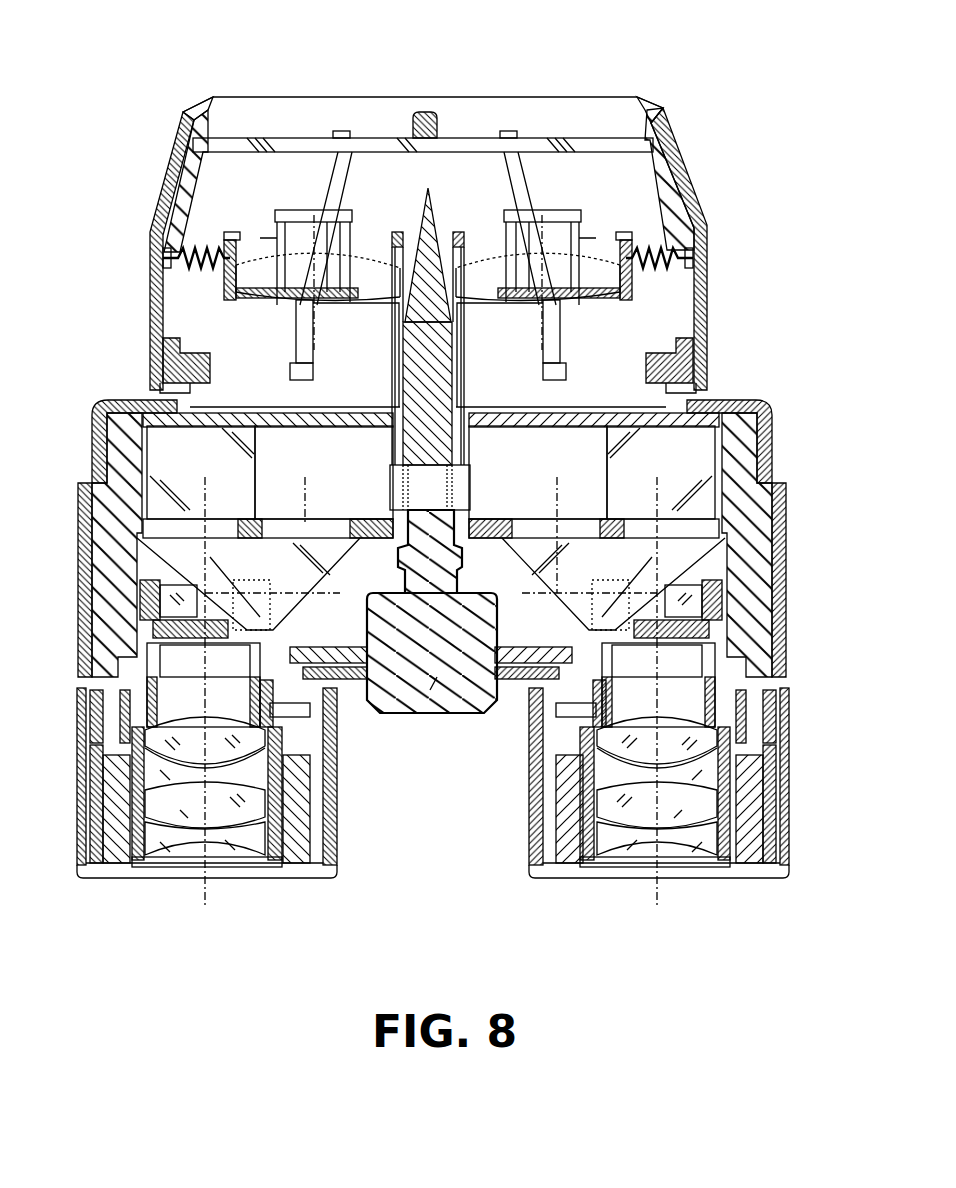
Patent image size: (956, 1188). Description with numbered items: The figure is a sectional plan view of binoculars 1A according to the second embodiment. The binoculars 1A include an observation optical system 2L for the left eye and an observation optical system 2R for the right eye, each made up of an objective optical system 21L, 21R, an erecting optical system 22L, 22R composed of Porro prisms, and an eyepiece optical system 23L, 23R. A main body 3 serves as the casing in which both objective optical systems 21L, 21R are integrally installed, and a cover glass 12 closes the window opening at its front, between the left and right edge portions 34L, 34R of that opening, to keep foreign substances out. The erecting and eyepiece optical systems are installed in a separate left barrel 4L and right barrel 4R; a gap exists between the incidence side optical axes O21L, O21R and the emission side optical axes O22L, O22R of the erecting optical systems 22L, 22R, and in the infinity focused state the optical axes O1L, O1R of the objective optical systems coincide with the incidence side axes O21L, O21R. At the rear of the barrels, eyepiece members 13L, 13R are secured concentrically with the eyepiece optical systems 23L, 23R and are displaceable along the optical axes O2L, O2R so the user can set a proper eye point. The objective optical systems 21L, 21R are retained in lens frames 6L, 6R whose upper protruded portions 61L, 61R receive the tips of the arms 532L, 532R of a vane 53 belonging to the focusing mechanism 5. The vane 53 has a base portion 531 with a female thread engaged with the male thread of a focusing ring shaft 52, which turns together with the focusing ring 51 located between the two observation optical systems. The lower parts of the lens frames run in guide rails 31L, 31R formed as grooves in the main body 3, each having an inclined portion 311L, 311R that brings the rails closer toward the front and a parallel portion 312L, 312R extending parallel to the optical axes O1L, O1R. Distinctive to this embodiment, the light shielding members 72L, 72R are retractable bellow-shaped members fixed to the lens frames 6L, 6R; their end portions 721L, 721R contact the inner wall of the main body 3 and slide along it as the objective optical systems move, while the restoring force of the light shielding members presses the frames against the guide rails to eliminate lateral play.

The binoculars 1A is at (531, 84).
The main body 3 is at (695, 142).
The cover glass 12 is at (318, 142).
The left edge portion 34L is at (186, 120).
The right edge portion 34R is at (660, 118).
The left light shielding member 72L is at (180, 243).
The right light shielding member 72R is at (705, 240).
The left end portion 721L is at (162, 268).
The right end portion 721R is at (705, 263).
The left lens frame 6L is at (223, 277).
The right lens frame 6R is at (635, 277).
The left objective optical system 21L is at (255, 267).
The right objective optical system 21R is at (603, 257).
The left protruded portion 61L is at (273, 223).
The right protruded portion 61R is at (585, 225).
The left arm 532L is at (373, 257).
The right arm 532R is at (480, 253).
The left guide rail 31L is at (153, 363).
The right guide rail 31R is at (711, 360).
The left inclined portion 311L is at (295, 315).
The right inclined portion 311R is at (631, 333).
The left parallel portion 312L is at (296, 365).
The right parallel portion 312R is at (565, 365).
The optical axis of left objective optical system O1L is at (315, 337).
The optical axis of right objective optical system O1R is at (541, 327).
The focusing ring shaft 52 is at (403, 442).
The vane 53 is at (470, 478).
The base portion 531 is at (400, 487).
The focusing mechanism 5 is at (460, 714).
The focusing ring 51 is at (437, 677).
The left barrel 4L is at (78, 600).
The right barrel 4R is at (791, 598).
The left erecting optical system 22L is at (273, 543).
The right erecting optical system 22R is at (597, 547).
The left incidence side optical axis O21L is at (330, 590).
The right incidence side optical axis O21R is at (545, 555).
The left eyepiece optical system 23L is at (85, 832).
The right eyepiece optical system 23R is at (785, 782).
The left eyepiece member 13L is at (335, 858).
The right eyepiece member 13R is at (530, 852).
The left observation optical system 2L is at (177, 873).
The right observation optical system 2R is at (623, 873).
The left emission side optical axis O22L is at (202, 673).
The right emission side optical axis O22R is at (653, 665).
The left eyepiece optical axis O2L is at (207, 903).
The right eyepiece optical axis O2R is at (663, 900).